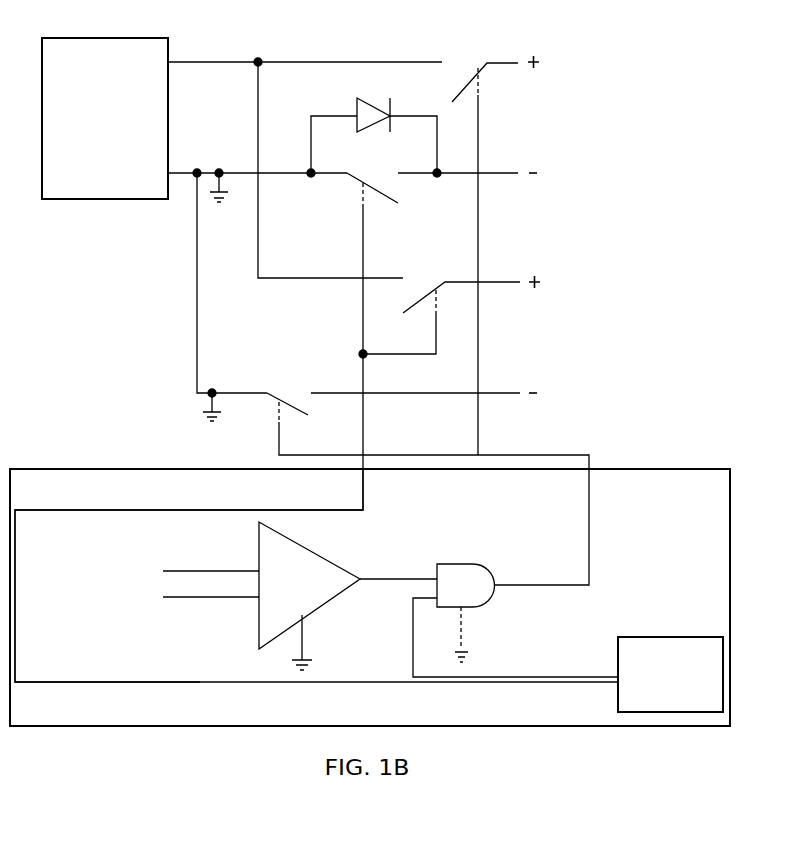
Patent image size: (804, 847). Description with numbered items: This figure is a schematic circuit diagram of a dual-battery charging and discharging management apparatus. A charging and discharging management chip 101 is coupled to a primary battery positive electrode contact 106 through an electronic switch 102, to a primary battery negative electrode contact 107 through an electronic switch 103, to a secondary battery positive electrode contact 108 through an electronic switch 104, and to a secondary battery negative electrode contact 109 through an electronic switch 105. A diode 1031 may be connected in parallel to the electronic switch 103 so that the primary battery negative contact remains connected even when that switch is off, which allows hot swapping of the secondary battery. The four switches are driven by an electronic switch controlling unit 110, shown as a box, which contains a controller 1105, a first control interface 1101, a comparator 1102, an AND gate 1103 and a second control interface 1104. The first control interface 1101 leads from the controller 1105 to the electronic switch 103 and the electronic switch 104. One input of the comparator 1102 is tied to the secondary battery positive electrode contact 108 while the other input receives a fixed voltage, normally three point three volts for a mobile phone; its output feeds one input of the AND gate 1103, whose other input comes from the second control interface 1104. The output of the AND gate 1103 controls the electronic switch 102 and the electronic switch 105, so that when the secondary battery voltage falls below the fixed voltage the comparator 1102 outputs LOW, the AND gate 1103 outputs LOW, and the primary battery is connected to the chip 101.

The charging and discharging management chip 101 is at (95, 38).
The electronic switch 102 is at (485, 250).
The electronic switch 103 is at (316, 417).
The diode 1031 is at (374, 127).
The electronic switch 104 is at (441, 306).
The electronic switch 105 is at (428, 479).
The primary battery positive electrode contact 106 is at (608, 66).
The primary battery negative electrode contact 107 is at (611, 171).
The secondary battery positive electrode contact 108 is at (609, 283).
The secondary battery negative electrode contact 109 is at (609, 391).
The electronic switch controlling unit 110 is at (114, 468).
The first control interface 1101 is at (215, 576).
The comparator 1102 is at (238, 598).
The AND gate 1103 is at (527, 608).
The second control interface 1104 is at (480, 639).
The controller 1105 is at (678, 637).